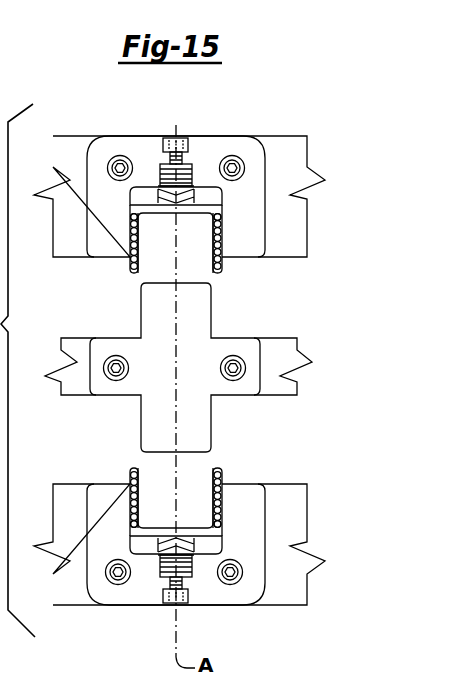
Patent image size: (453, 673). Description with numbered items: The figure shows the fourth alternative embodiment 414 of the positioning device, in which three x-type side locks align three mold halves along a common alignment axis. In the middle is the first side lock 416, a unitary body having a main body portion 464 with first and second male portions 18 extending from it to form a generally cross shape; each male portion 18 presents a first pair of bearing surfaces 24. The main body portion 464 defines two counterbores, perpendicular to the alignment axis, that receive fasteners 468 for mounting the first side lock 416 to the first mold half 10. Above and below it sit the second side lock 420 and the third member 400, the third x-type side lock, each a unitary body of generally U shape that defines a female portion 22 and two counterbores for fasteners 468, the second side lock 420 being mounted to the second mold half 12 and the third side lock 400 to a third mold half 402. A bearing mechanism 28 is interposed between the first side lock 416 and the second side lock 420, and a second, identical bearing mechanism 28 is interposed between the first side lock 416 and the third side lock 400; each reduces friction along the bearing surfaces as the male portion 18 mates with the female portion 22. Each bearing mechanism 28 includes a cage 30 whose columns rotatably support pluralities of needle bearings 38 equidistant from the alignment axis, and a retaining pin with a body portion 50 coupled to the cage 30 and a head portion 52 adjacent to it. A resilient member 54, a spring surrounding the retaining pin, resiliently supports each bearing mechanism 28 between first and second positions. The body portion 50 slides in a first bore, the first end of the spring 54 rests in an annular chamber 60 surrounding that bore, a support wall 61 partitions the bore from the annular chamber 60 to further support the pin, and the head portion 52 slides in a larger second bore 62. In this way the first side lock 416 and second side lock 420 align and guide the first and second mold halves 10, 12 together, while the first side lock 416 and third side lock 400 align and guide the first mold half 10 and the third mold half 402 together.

The first mold half 10 is at (297, 387).
The second mold half 12 is at (307, 570).
The male portion 18 is at (157, 302).
The female portion 22 is at (209, 182).
The first pair of bearing surfaces 24 is at (141, 433).
The bearing mechanism 28 is at (240, 207).
The cage 30 is at (108, 472).
The needle bearings 38 is at (221, 261).
The body portion 50 is at (183, 163).
The head portion 52 is at (165, 137).
The resilient member 54 is at (157, 183).
The annular chamber 60 is at (160, 178).
The support wall 61 is at (205, 182).
The second bore 62 is at (182, 134).
The third member 400 is at (97, 175).
The third mold half 402 is at (307, 152).
The fourth alternative embodiment 414 is at (305, 311).
The first side lock 416 is at (190, 370).
The second side lock 420 is at (100, 573).
The main body portion 464 is at (163, 377).
The fasteners 468 is at (118, 165).